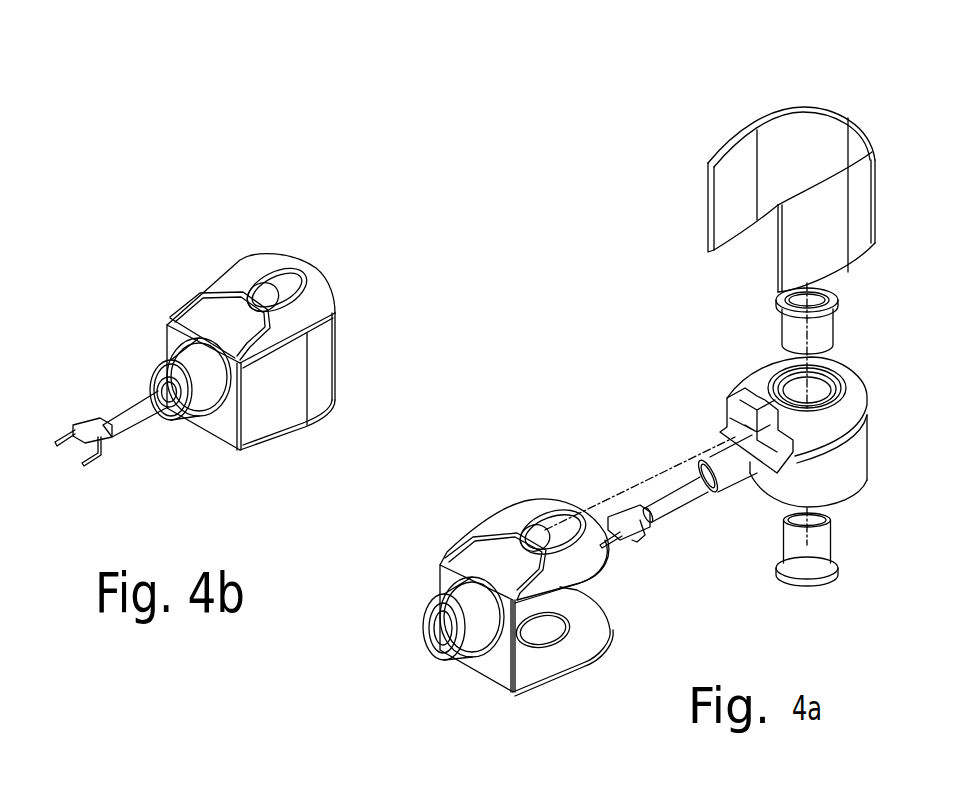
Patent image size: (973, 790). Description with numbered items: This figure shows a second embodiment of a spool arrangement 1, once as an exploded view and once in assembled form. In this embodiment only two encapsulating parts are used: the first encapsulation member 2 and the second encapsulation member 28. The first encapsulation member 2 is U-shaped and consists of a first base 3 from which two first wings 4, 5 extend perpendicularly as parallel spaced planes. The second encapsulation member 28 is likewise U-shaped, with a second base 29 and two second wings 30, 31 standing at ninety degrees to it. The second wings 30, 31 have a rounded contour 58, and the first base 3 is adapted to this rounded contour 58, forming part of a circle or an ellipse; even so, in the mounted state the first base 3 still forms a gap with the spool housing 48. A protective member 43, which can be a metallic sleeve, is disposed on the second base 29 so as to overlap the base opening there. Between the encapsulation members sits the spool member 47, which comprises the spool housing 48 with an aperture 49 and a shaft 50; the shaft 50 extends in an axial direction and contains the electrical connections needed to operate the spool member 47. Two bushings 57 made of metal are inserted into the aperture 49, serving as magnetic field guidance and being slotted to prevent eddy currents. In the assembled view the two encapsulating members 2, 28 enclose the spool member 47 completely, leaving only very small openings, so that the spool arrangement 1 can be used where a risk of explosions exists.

In FIG. 4B, the spool arrangement 1 is at (197, 260).
In FIG. 4A, the spool arrangement 1 is at (650, 222).
In FIG. 4B, the first encapsulation member 2 is at (348, 360).
In FIG. 4A, the first encapsulation member 2 is at (870, 115).
In FIG. 4B, the first base 3 is at (342, 327).
In FIG. 4A, the first base 3 is at (873, 147).
In FIG. 4A, the first wing 4 is at (737, 138).
In FIG. 4B, the first wing 5 is at (263, 420).
In FIG. 4A, the first wing 5 is at (818, 238).
In FIG. 4B, the second encapsulation member 28 is at (197, 447).
In FIG. 4A, the second encapsulation member 28 is at (423, 583).
In FIG. 4B, the second base 29 is at (248, 537).
In FIG. 4B, the second wing 30 is at (210, 317).
In FIG. 4A, the second wing 30 is at (503, 510).
In FIG. 4A, the second wing 31 is at (567, 653).
In FIG. 4B, the protective member 43 is at (173, 360).
In FIG. 4A, the spool member 47 is at (873, 453).
In FIG. 4A, the spool housing 48 is at (847, 480).
In FIG. 4A, the aperture 49 is at (795, 383).
In FIG. 4A, the shaft 50 is at (738, 477).
In FIG. 4A, the bushing 57 is at (828, 333).
In FIG. 4A, the rounded contour 58 is at (547, 497).